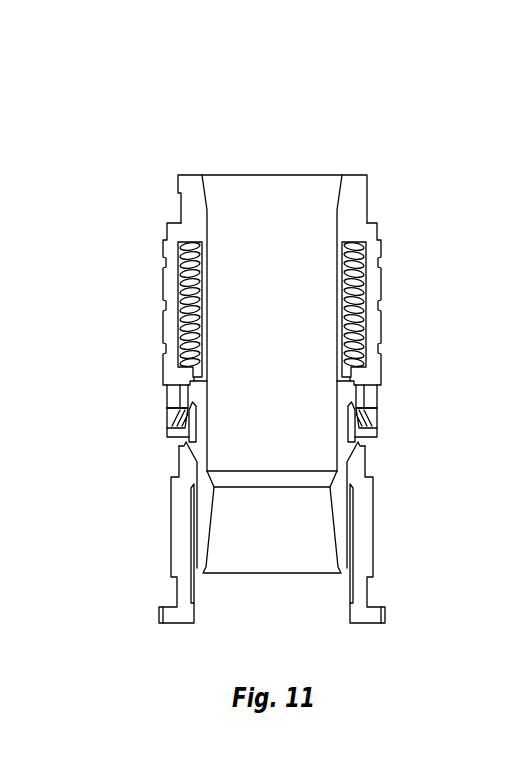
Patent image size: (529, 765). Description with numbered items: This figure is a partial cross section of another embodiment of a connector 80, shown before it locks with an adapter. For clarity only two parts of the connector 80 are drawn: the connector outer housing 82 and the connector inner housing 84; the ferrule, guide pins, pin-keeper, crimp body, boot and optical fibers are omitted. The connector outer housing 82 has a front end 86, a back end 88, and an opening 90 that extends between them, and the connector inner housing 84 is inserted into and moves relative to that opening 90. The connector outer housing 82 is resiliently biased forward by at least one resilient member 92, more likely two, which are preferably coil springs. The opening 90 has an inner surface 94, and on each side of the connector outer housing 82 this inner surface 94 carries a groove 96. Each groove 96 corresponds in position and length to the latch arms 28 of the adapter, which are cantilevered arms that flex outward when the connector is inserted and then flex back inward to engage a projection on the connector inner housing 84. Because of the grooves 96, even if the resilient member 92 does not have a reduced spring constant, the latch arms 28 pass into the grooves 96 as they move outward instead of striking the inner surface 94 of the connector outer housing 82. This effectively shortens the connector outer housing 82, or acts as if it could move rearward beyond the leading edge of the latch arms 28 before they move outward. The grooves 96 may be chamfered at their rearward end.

The connector 80 is at (458, 121).
The back end 88 is at (372, 222).
The resilient member 92 is at (365, 268).
The connector outer housing 82 is at (380, 313).
The front end 86 is at (375, 425).
The opening 90 is at (355, 430).
The groove 96 is at (167, 433).
The inner surface 94 is at (184, 443).
The latch arm 28 is at (365, 543).
The connector inner housing 84 is at (297, 555).